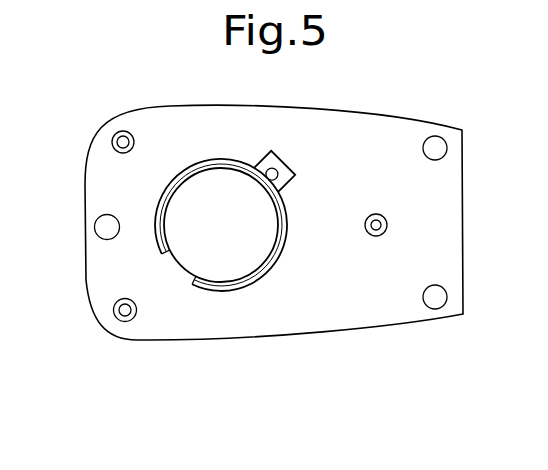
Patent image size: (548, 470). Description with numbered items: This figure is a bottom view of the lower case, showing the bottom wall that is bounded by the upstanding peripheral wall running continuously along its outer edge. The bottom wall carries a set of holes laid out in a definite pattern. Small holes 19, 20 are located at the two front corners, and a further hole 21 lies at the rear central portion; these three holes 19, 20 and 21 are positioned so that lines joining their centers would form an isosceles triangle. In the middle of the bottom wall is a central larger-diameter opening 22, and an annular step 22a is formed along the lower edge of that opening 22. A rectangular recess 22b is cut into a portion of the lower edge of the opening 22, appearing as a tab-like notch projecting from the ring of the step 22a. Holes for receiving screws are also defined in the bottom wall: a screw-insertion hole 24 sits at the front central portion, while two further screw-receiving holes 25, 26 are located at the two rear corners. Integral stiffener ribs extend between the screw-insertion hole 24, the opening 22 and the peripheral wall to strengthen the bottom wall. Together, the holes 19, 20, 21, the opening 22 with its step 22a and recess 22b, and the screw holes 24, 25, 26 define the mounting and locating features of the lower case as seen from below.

The small hole 19 is at (435, 309).
The small hole 20 is at (436, 136).
The hole 21 is at (94, 227).
The larger-diameter opening 22 is at (248, 253).
The annular step 22a is at (251, 277).
The rectangular recess 22b is at (279, 163).
The screw-insertion hole 24 is at (388, 225).
The screw-receiving hole 25 is at (114, 316).
The screw-receiving hole 26 is at (112, 141).